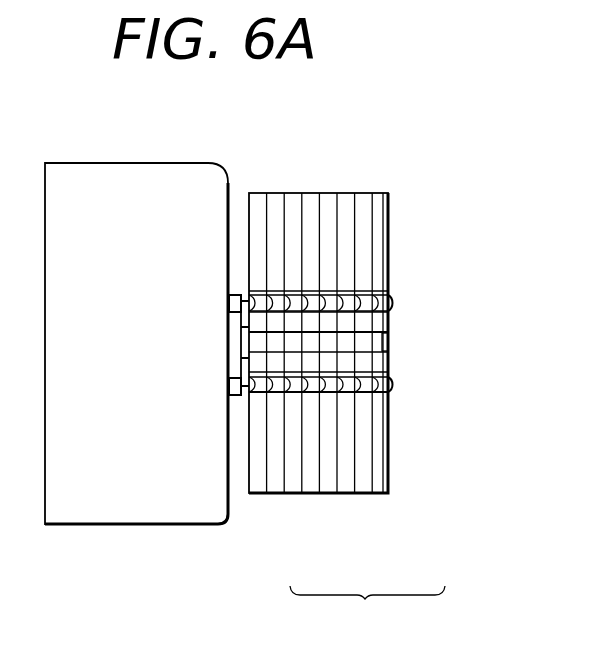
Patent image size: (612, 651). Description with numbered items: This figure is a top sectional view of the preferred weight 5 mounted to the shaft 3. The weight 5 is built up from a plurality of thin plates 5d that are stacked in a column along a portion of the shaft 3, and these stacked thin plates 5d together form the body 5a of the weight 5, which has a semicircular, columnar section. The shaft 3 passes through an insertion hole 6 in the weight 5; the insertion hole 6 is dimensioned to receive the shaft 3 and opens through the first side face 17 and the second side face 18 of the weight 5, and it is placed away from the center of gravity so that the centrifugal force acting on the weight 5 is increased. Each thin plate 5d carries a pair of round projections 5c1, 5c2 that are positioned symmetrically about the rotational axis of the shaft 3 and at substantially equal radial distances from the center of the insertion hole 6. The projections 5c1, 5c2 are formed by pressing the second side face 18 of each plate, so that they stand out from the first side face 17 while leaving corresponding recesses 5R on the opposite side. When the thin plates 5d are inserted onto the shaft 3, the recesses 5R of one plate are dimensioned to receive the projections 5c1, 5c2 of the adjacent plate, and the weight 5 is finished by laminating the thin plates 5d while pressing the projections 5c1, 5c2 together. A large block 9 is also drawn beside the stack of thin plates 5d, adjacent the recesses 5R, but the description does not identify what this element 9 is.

The weight 5 is at (377, 362).
The body / housing block 9 is at (136, 507).
The shaft 3 is at (388, 338).
The insertion hole 6 is at (385, 343).
The projection 5c2 is at (392, 302).
The projection 5c1 is at (393, 385).
The thin plates 5d is at (345, 488).
The body 5a is at (367, 609).
The first side face 17 is at (272, 485).
The second side face 18 is at (243, 485).
The recesses 5R is at (229, 301).